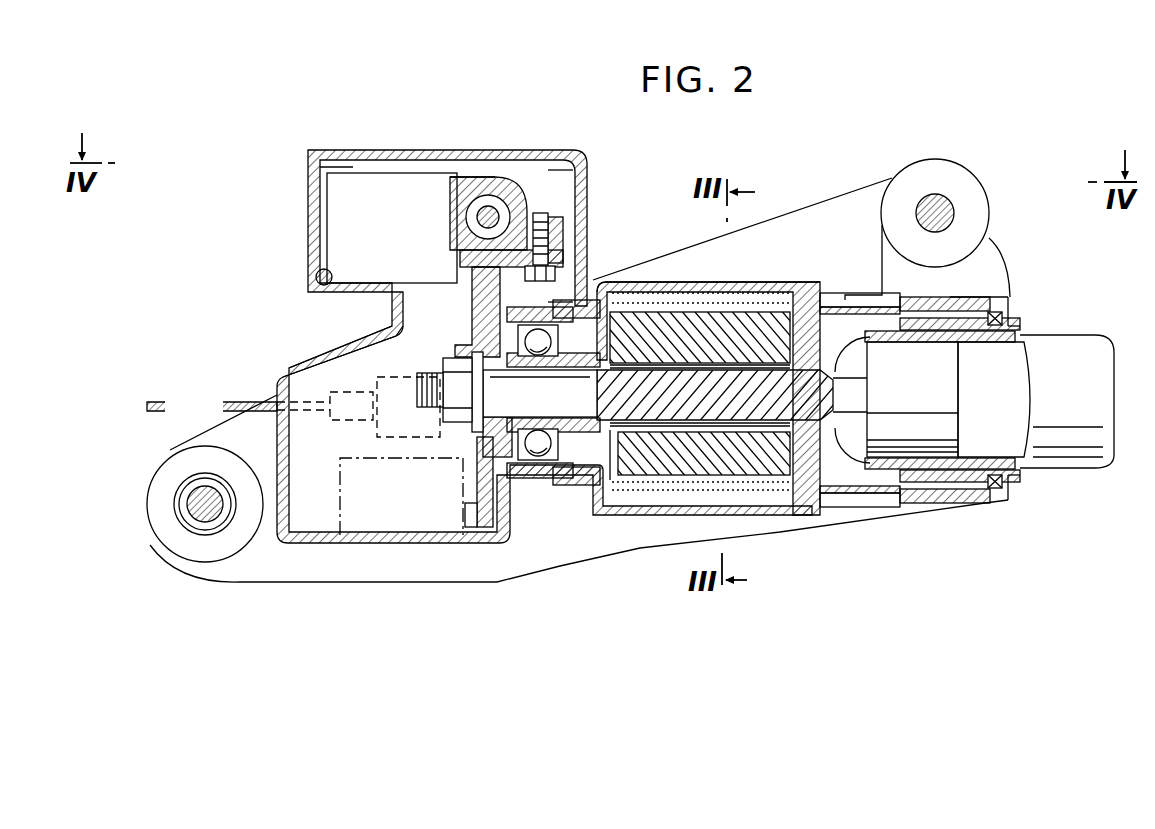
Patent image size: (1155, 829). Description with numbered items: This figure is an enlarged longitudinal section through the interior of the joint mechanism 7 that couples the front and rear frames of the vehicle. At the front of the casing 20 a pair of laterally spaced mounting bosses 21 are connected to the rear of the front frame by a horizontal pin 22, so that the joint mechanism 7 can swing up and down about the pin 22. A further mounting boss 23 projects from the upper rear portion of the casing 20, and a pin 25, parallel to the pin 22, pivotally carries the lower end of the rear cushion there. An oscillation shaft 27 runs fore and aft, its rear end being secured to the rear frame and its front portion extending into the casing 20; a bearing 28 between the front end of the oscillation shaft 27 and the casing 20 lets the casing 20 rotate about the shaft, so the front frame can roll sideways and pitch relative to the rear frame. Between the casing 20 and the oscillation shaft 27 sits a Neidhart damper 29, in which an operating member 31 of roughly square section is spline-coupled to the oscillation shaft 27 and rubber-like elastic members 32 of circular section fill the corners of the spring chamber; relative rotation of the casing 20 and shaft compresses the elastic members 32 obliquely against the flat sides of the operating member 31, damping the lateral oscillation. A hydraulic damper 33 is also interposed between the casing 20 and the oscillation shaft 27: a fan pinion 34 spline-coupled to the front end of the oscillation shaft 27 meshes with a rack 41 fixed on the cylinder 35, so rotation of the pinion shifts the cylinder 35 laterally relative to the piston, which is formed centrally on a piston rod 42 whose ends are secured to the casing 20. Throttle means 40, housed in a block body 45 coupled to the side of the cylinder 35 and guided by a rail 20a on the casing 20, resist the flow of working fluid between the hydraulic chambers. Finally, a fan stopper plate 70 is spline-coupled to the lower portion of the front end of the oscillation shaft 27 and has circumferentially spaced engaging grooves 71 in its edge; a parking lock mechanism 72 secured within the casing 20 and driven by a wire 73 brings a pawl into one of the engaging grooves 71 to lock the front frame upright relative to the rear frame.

The joint mechanism 7 is at (777, 224).
The casing 20 is at (652, 284).
The rail 20a is at (316, 277).
The mounting bosses 21 is at (244, 420).
The horizontal pin 22 is at (195, 521).
The mounting boss 23 is at (984, 200).
The pin 25 is at (936, 207).
The oscillation shaft 27 is at (698, 410).
The bearing 28 is at (552, 344).
The Neidhart damper 29 is at (703, 270).
The operating member 31 is at (706, 352).
The rubber-like elastic members 32 is at (733, 291).
The hydraulic damper 33 is at (440, 308).
The fan pinion 34 is at (516, 177).
The cylinder 35 is at (485, 177).
The throttle means 40 is at (394, 172).
The rack 41 is at (533, 262).
The piston rod 42 is at (490, 216).
The block body 45 is at (394, 234).
The fan stopper plate 70 is at (490, 490).
The engaging grooves 71 is at (468, 512).
The parking lock mechanism 72 is at (372, 458).
The wire 73 is at (246, 400).